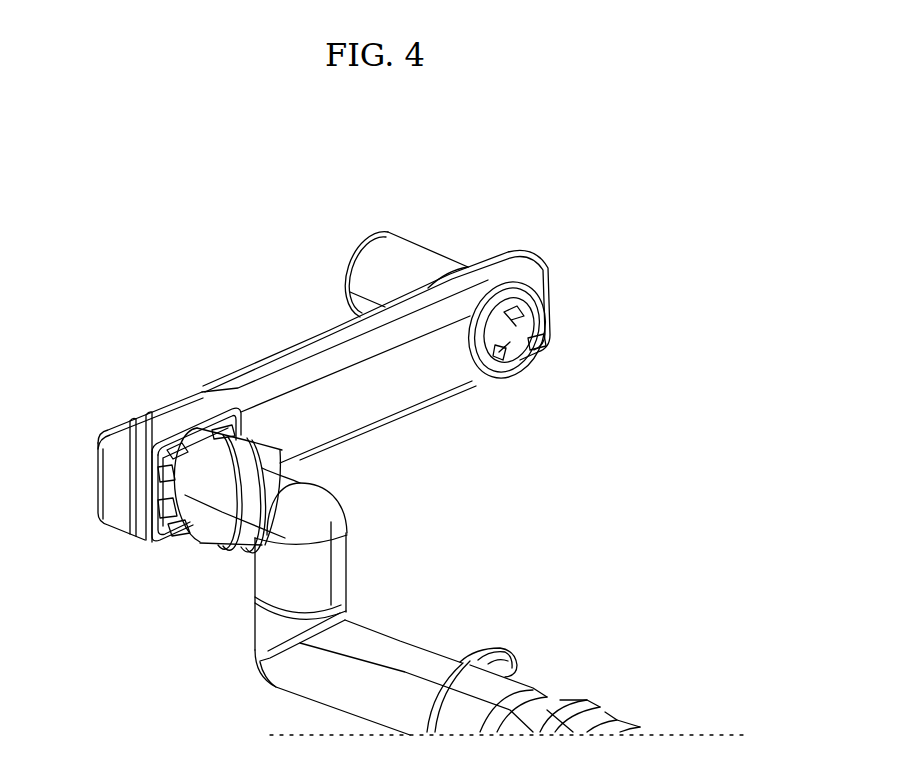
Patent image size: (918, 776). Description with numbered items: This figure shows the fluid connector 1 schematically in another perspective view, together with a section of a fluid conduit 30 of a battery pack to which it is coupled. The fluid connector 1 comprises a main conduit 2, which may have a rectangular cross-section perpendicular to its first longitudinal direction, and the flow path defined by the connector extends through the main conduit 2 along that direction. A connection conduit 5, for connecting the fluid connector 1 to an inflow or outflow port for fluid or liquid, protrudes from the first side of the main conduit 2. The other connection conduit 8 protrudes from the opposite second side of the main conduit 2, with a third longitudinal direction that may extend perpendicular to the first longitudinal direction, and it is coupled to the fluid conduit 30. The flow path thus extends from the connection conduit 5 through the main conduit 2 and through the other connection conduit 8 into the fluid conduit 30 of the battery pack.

The fluid connector 1 is at (125, 240).
The main conduit 2 is at (287, 347).
The connection conduit 5 is at (407, 263).
The other connection conduit 8 is at (196, 444).
The fluid conduit 30 is at (372, 560).